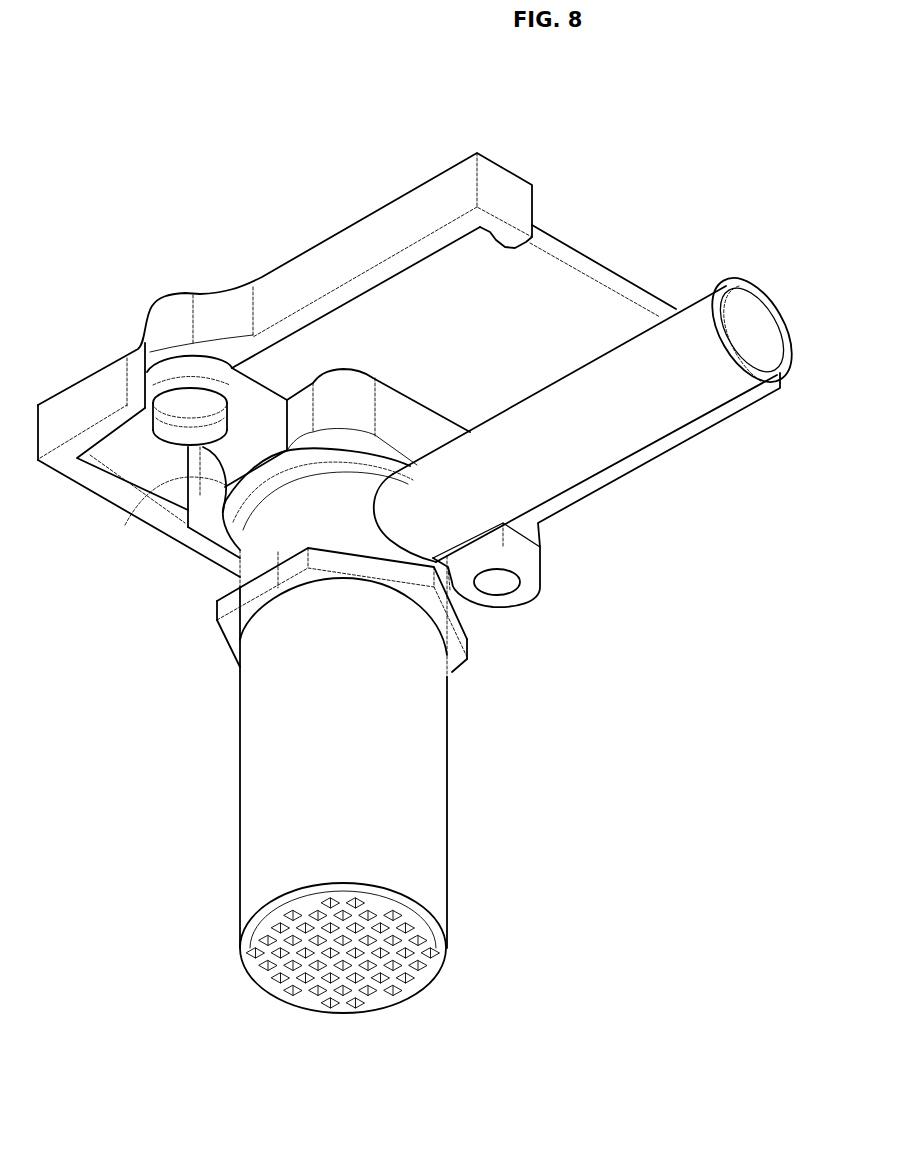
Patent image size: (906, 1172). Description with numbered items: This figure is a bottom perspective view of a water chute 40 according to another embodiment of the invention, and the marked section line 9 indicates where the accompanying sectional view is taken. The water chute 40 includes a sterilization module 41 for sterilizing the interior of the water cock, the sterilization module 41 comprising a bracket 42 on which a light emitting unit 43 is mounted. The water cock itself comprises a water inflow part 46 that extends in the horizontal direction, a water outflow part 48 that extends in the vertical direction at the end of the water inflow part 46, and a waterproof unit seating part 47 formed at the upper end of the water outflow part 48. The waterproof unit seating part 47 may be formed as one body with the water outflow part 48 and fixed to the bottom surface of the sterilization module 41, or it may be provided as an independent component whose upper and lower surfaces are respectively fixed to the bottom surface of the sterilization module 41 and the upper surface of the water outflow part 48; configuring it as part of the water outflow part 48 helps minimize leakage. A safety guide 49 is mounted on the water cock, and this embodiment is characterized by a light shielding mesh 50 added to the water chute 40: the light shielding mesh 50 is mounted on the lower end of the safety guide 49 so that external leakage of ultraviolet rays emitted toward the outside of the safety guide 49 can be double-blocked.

The water chute 40 is at (639, 166).
The sterilization module 41 is at (374, 152).
The bracket 42 is at (334, 256).
The light emitting unit 43 is at (403, 292).
The water inflow part 46 is at (620, 440).
The waterproof unit seating part 47 is at (210, 478).
The water outflow part 48 is at (242, 638).
The safety guide 49 is at (250, 785).
The light shielding mesh 50 is at (430, 932).
The section line for FIG. 9 is at (128, 583).